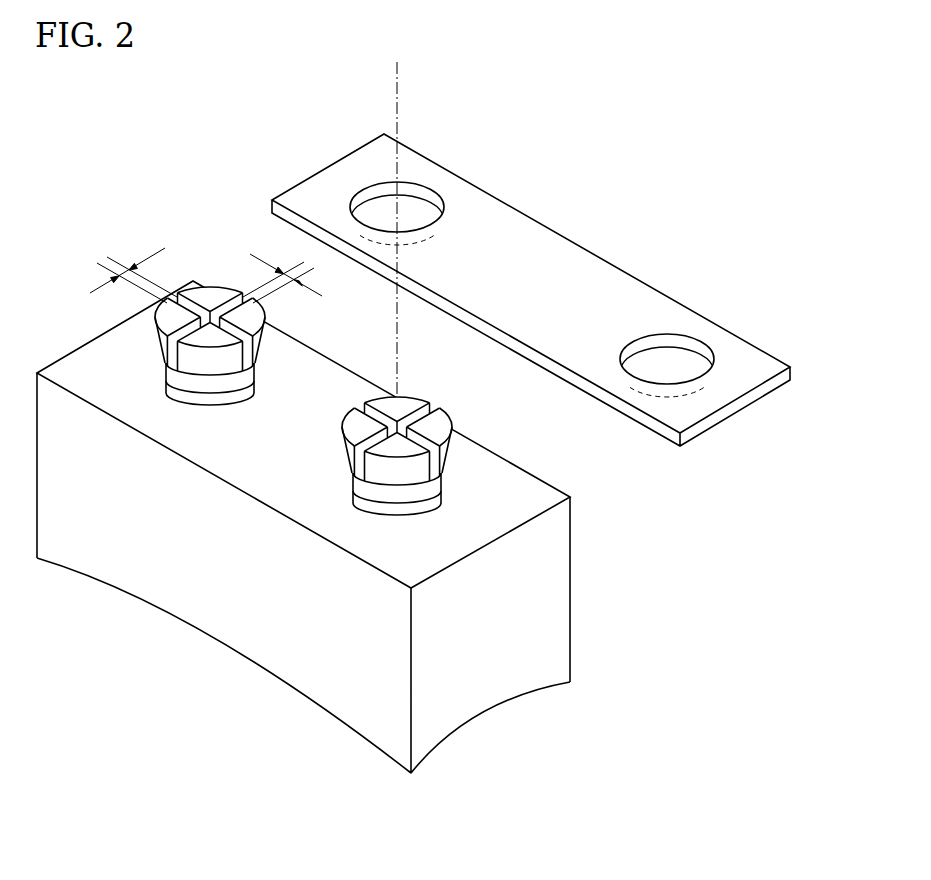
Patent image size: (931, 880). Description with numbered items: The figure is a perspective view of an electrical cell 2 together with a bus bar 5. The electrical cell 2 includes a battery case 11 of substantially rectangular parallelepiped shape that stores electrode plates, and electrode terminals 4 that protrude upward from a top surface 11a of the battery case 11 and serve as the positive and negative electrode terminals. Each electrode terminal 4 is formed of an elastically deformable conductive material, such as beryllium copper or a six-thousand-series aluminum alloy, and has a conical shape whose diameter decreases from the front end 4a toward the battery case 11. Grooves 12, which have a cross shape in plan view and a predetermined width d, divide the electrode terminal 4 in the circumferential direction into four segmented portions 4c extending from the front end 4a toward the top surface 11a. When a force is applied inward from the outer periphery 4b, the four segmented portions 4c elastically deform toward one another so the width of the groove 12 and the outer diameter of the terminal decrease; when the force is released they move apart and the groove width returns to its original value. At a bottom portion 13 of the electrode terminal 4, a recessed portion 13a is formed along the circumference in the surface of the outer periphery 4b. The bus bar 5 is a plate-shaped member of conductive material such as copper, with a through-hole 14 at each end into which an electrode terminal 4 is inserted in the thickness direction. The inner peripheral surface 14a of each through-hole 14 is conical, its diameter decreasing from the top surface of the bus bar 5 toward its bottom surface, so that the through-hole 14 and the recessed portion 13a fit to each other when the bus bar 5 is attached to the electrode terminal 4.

The electrical cell 2 is at (351, 517).
The electrode terminal 4 is at (331, 481).
The front end 4a is at (258, 312).
The outer periphery 4b is at (260, 350).
The segmented portion 4c is at (420, 398).
The bus bar 5 is at (531, 290).
The battery case 11 is at (353, 527).
The top surface 11a is at (502, 515).
The groove 12 is at (226, 306).
The bottom portion 13 is at (384, 505).
The recessed portion 13a is at (374, 496).
The through-hole 14 is at (546, 289).
The inner peripheral surface 14a is at (658, 342).